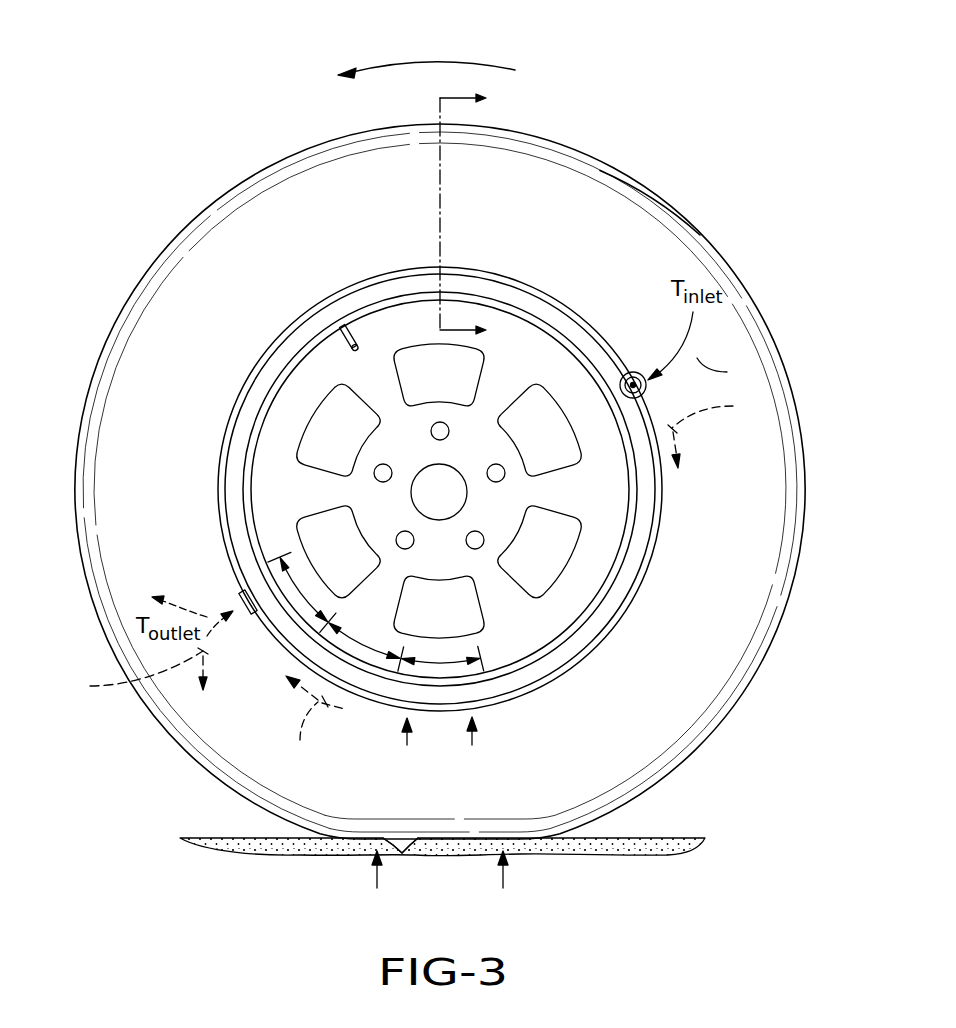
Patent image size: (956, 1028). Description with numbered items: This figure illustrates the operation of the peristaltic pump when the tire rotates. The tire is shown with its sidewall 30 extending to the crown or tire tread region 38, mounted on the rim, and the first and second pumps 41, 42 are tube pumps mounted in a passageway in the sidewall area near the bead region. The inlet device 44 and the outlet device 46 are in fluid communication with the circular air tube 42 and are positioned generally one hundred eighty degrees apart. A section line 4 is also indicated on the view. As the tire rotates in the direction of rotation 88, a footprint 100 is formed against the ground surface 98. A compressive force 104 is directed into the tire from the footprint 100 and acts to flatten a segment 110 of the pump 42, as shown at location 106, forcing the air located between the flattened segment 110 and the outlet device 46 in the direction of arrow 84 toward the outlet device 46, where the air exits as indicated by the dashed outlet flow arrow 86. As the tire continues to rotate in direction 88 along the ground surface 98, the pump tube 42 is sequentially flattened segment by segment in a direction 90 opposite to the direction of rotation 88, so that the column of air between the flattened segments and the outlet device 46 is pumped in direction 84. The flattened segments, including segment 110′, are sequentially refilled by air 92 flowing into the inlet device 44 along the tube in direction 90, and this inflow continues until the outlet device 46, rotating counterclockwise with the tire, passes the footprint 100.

The section line 4- 4 is at (474, 215).
The sidewall 30 is at (548, 198).
The crown or tire tread region 38 is at (655, 188).
The first pump 41 is at (503, 278).
The second pump 42 is at (592, 659).
The inlet device 44 is at (639, 365).
The outlet device 46 is at (246, 616).
The direction of air flow toward outlet device 84 is at (314, 721).
The air flow direction arrow 86 is at (132, 674).
The direction of rotation 88 is at (512, 68).
The direction of sequential flattening and air inflow 90 is at (716, 431).
The air 92 is at (697, 358).
The ground surface 98 is at (690, 838).
The footprint 100 is at (404, 842).
The compressive force 104 is at (377, 880).
The flattened pump location 106 is at (407, 745).
The segment of the pump 110 is at (376, 611).
The circumferential arc segment 110′ is at (364, 634).